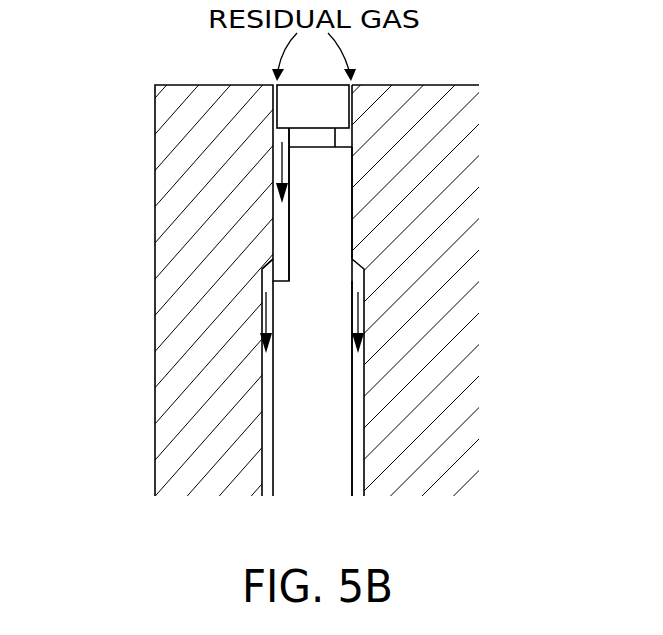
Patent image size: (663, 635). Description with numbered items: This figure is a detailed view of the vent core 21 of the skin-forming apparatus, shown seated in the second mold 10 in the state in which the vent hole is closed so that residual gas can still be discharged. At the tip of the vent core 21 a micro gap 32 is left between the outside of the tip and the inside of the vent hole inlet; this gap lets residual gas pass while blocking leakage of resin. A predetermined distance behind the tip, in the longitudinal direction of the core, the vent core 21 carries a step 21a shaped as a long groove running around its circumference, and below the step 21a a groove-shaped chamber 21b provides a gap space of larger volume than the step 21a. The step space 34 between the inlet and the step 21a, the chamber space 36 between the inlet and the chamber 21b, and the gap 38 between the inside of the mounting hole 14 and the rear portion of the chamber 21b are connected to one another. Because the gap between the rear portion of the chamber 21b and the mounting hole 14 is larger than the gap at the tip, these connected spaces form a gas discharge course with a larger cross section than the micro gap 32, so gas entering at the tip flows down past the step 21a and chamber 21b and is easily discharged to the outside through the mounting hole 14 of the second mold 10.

The second mold 10 is at (200, 387).
The mounting hole 14 is at (281, 230).
The vent core 21 is at (372, 372).
The step 21a is at (350, 140).
The chamber 21b is at (283, 240).
The micro gap 32 is at (274, 108).
The step space 34 is at (277, 133).
The chamber space 36 is at (275, 222).
The gap 38 is at (265, 363).